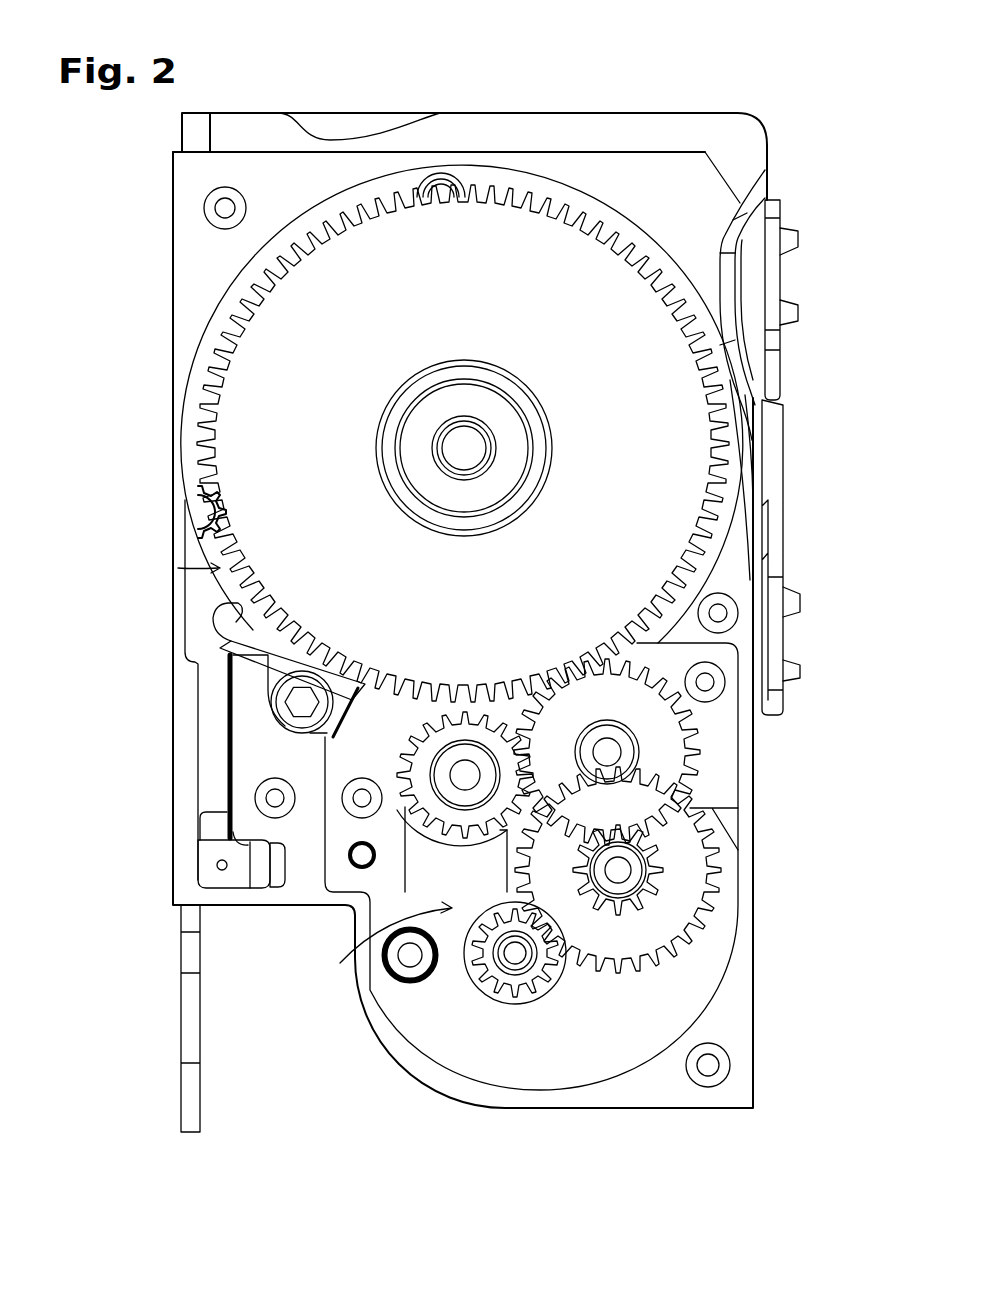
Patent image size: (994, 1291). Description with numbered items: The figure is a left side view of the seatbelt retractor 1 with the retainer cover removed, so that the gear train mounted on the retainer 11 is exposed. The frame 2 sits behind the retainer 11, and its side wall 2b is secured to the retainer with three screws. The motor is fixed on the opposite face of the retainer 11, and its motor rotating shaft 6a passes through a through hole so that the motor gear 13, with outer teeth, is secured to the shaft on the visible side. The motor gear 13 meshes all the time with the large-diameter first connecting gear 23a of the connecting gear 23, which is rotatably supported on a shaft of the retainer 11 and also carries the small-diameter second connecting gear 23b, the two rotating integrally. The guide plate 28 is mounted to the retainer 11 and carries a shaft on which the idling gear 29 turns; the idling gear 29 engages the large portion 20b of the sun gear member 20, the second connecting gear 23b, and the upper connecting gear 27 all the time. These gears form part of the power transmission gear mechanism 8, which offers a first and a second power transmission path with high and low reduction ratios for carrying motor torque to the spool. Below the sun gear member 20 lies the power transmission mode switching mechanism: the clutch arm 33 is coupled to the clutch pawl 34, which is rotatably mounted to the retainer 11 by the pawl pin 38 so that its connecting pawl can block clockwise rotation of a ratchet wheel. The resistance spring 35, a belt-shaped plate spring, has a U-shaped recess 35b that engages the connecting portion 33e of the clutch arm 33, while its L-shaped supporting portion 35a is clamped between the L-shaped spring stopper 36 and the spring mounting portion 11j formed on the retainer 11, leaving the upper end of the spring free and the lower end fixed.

The seatbelt retractor 1 is at (547, 93).
The frame 2 is at (270, 109).
The side wall 2b is at (672, 155).
The retainer 11 is at (200, 250).
The sun gear member 20 is at (408, 443).
The large-sized portion 20b is at (245, 352).
The pawl pin 38 is at (185, 490).
The clutch pawl 34 is at (178, 568).
The connecting portion 33e is at (212, 620).
The recess 35b is at (212, 636).
The clutch arm 33 is at (262, 655).
The resistance spring 35 is at (228, 735).
The spring stopper 36 is at (203, 822).
The supporting portion 35a is at (205, 863).
The spring mounting portion 11j is at (250, 842).
The power transmission gear mechanism 8 is at (340, 963).
The second connecting gear 27 is at (480, 810).
The guide plate 28 is at (706, 728).
The idling gear 29 is at (655, 770).
The connecting gear 23 is at (689, 884).
The second connecting gear 23b is at (628, 917).
The first connecting gear 23a is at (697, 955).
The motor rotating shaft 6a is at (512, 975).
The motor gear 13 is at (548, 975).